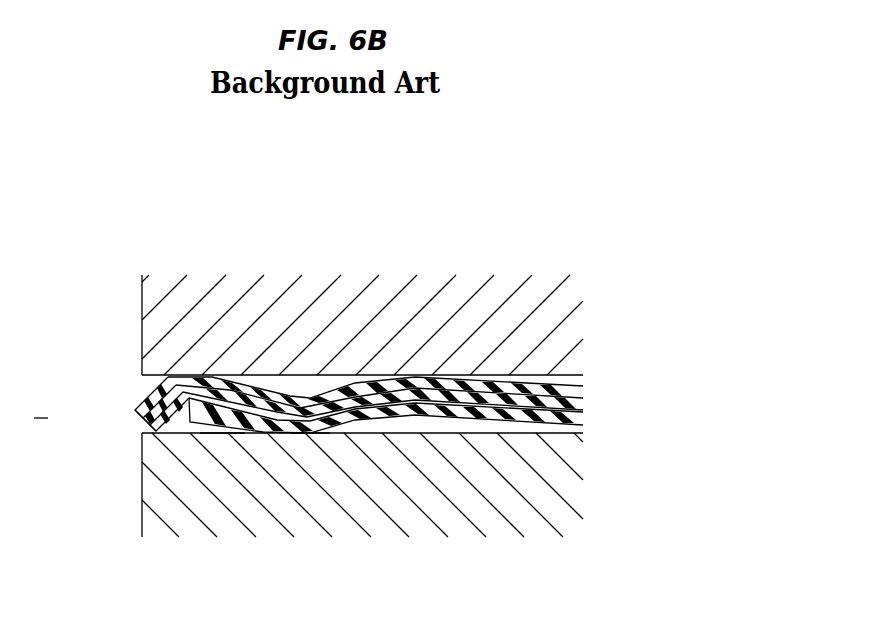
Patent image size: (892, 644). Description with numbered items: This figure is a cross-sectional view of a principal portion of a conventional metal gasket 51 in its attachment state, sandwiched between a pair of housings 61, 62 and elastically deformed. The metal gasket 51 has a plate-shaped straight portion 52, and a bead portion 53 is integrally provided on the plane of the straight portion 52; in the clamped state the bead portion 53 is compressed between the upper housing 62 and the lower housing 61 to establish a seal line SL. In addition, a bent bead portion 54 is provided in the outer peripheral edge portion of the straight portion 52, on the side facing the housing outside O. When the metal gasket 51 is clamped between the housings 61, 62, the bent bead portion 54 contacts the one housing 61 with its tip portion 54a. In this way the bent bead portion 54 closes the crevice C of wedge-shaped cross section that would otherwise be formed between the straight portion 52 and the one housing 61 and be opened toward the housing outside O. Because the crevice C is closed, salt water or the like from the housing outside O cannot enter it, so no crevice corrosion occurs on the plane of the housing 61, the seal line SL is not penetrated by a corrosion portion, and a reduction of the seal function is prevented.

The metal gasket 51 is at (348, 353).
The straight portion 52 is at (268, 400).
The bead portion 53 is at (421, 393).
The bent bead portion 54 is at (155, 392).
The tip portion 54a is at (161, 432).
The housing 61 is at (495, 520).
The housing 62 is at (497, 290).
The crevice C is at (222, 433).
The seal line SL is at (310, 434).
The housing outside O is at (41, 409).